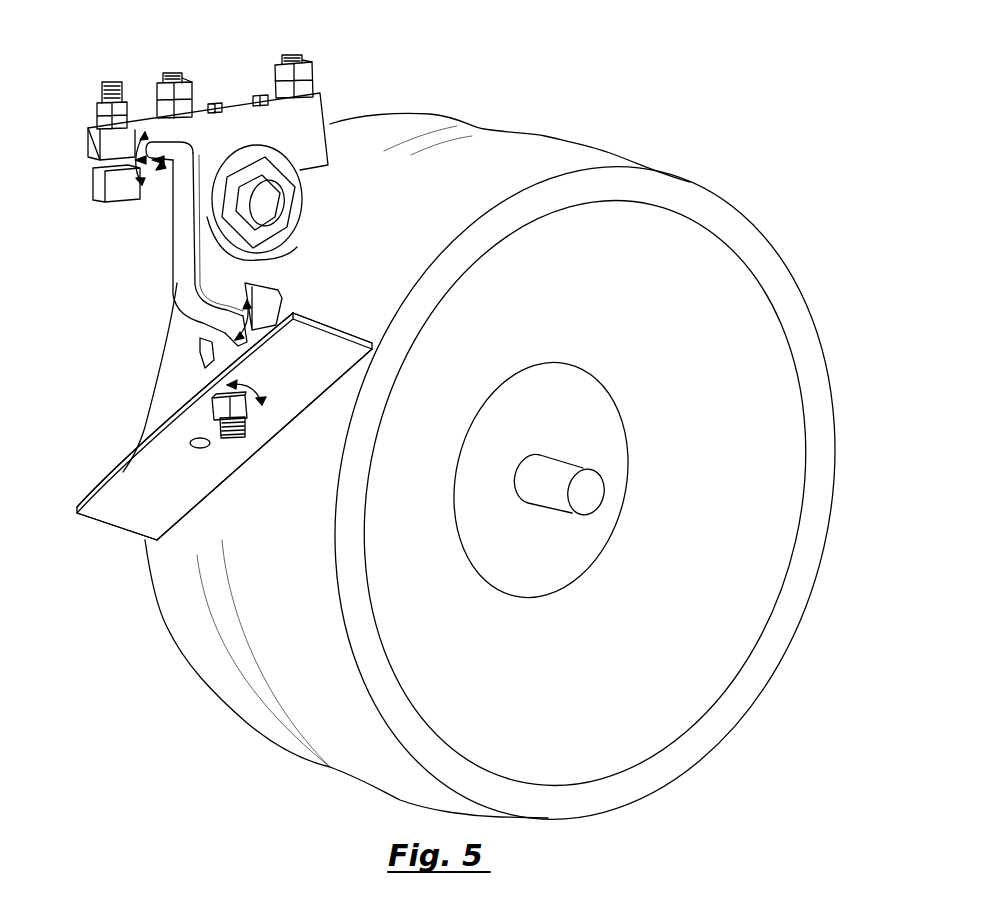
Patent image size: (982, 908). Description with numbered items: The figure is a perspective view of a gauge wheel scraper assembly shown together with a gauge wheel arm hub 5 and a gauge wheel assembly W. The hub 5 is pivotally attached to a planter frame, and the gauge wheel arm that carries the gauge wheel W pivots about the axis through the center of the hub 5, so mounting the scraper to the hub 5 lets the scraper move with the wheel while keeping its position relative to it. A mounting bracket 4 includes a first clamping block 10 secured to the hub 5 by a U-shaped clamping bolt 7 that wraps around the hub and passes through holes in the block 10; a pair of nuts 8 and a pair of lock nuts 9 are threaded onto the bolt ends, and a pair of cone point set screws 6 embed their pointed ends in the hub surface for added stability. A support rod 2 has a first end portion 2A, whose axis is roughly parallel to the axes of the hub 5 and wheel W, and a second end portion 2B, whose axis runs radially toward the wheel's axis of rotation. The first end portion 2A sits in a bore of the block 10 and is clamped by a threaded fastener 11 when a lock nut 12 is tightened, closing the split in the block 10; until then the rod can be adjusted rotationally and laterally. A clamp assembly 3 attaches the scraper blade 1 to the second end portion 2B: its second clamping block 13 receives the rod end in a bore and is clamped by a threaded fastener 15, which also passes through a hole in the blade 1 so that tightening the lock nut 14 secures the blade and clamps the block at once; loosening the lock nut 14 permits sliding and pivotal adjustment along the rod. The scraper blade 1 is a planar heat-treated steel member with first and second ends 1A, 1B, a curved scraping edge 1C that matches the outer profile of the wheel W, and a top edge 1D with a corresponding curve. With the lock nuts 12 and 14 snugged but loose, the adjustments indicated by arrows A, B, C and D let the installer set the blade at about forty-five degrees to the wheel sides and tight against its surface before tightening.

The scraper blade 1 is at (100, 512).
The first end 1A is at (127, 532).
The second end 1B is at (347, 333).
The scraping edge 1C is at (213, 477).
The top edge 1D is at (118, 473).
The support rod 2 is at (187, 273).
The first end portion 2A is at (170, 150).
The second end portion 2B is at (217, 313).
The clamp assembly 3 is at (267, 310).
The mounting bracket 4 is at (320, 130).
The gauge wheel arm hub 5 is at (297, 210).
The cone point set screws 6 is at (258, 98).
The U-shaped clamping bolt 7 is at (257, 260).
The nuts 8 is at (162, 108).
The lock nuts 9 is at (187, 83).
The first clamping block 10 is at (97, 145).
The threaded fastener 11 is at (113, 205).
The lock nut 12 is at (107, 113).
The second clamping block 13 is at (207, 350).
The lock nut 14 is at (217, 405).
The threaded fastener 15 is at (233, 430).
The gauge wheel assembly W is at (528, 157).
The arrow A is at (140, 162).
The arrow B is at (162, 160).
The arrow C is at (247, 333).
The arrow D is at (267, 398).